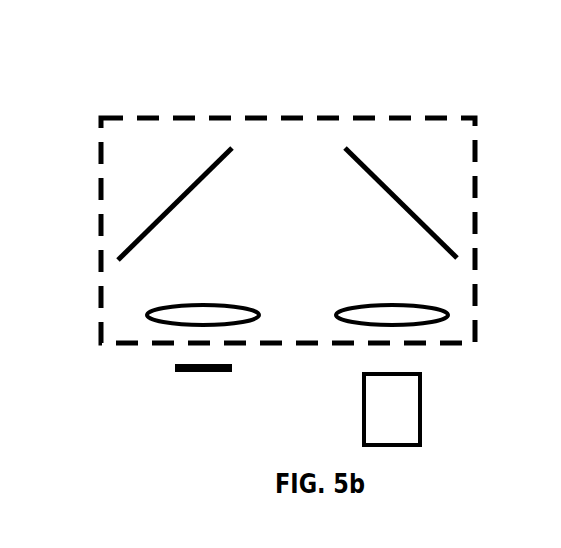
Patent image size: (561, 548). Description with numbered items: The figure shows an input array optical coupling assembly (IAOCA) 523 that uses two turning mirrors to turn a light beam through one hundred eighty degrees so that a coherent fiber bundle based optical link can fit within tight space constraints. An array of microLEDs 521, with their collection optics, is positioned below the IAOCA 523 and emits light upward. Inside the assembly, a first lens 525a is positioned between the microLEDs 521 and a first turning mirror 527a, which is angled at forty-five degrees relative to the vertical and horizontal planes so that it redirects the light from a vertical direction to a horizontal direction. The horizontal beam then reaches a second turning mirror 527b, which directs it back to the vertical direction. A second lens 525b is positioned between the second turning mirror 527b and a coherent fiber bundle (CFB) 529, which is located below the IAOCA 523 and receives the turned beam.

The input array optical coupling assembly (IAOCA) 523 is at (288, 118).
The first turning mirror 527a is at (190, 194).
The second turning mirror 527b is at (407, 205).
The first lens 525a is at (197, 315).
The second lens 525b is at (398, 312).
The array of microLEDs 521 is at (185, 372).
The coherent fiber bundle (CFB) 529 is at (402, 410).